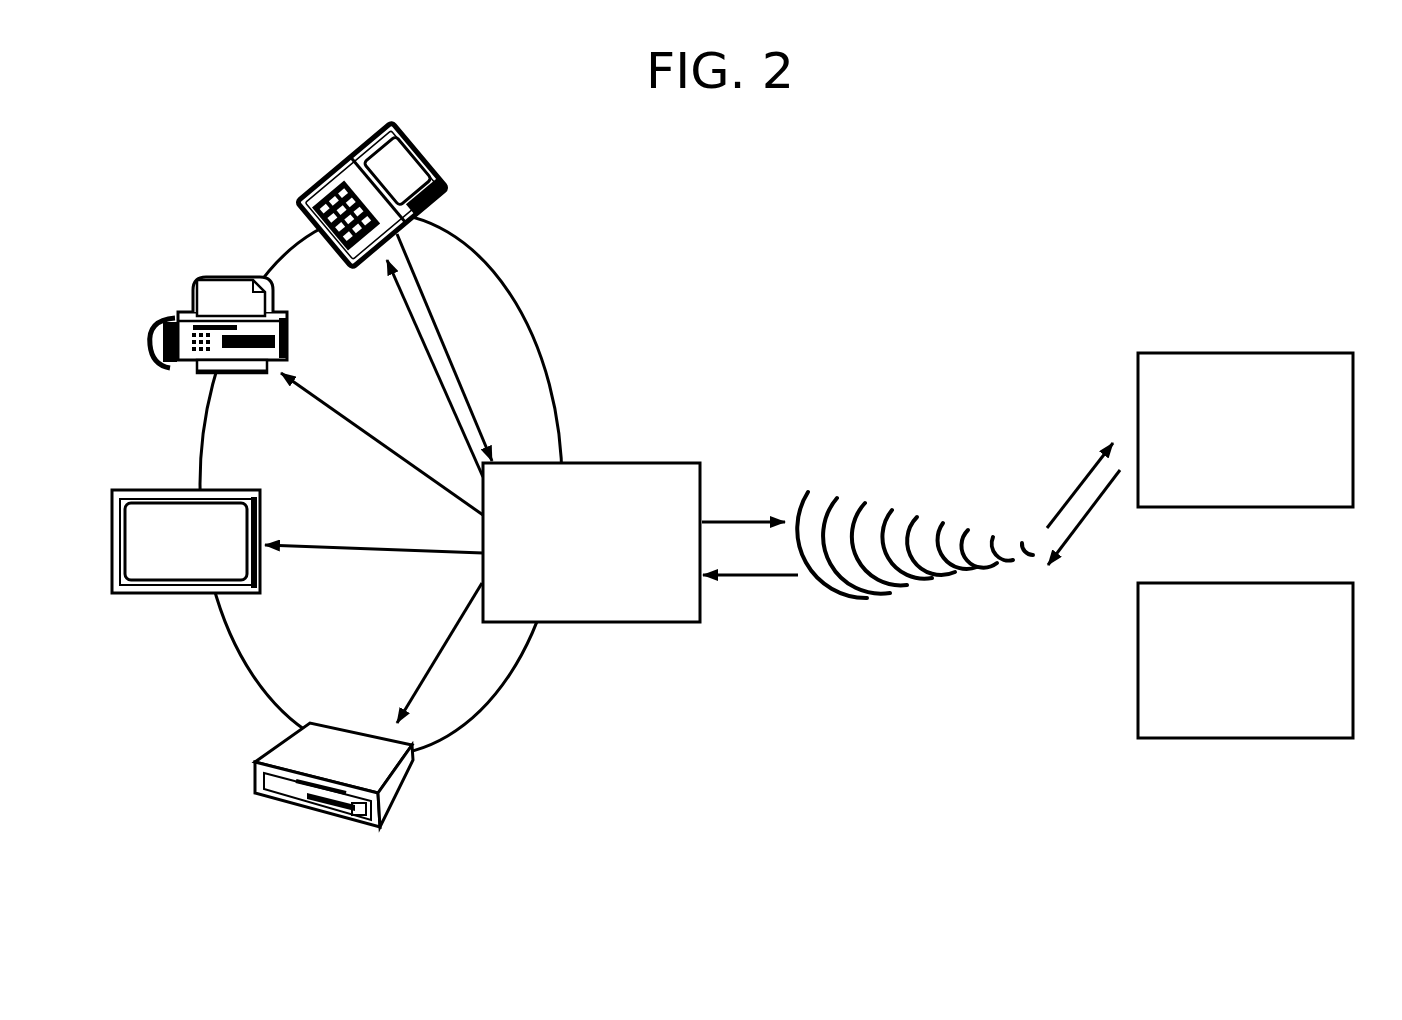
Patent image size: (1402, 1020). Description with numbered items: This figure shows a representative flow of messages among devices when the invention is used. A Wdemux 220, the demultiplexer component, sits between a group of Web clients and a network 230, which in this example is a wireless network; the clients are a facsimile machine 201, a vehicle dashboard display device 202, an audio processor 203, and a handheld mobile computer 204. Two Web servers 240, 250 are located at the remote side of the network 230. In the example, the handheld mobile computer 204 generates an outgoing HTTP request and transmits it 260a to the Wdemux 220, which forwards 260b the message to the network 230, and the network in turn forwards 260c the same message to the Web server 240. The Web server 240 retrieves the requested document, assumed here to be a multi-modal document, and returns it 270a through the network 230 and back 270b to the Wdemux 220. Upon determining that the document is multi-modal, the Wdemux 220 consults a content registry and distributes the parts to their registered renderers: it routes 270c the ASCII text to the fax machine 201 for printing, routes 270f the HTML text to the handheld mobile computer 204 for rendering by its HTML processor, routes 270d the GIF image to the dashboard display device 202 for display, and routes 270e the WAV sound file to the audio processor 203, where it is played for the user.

The facsimile machine 201 is at (228, 275).
The vehicle dashboard display device 202 is at (202, 595).
The audio processor 203 is at (383, 802).
The handheld mobile computer 204 is at (455, 160).
The Wdemux 220 is at (613, 462).
The network 230 is at (893, 590).
The Web server 240 is at (1278, 352).
The Web server 250 is at (1278, 583).
The transmission of outgoing HTTP request 260a is at (463, 390).
The forwarding of request to network 260b is at (741, 508).
The forwarding of request to Web server 260c is at (1065, 502).
The return of document through network 270a is at (1093, 507).
The return of document to Wdemux 270b is at (753, 577).
The routing of ASCII text to fax machine 270c is at (316, 397).
The routing of image to dashboard display 270d is at (380, 553).
The routing of sound file to audio processor 270e is at (413, 687).
The routing of HTML text to handheld device 270f is at (413, 318).